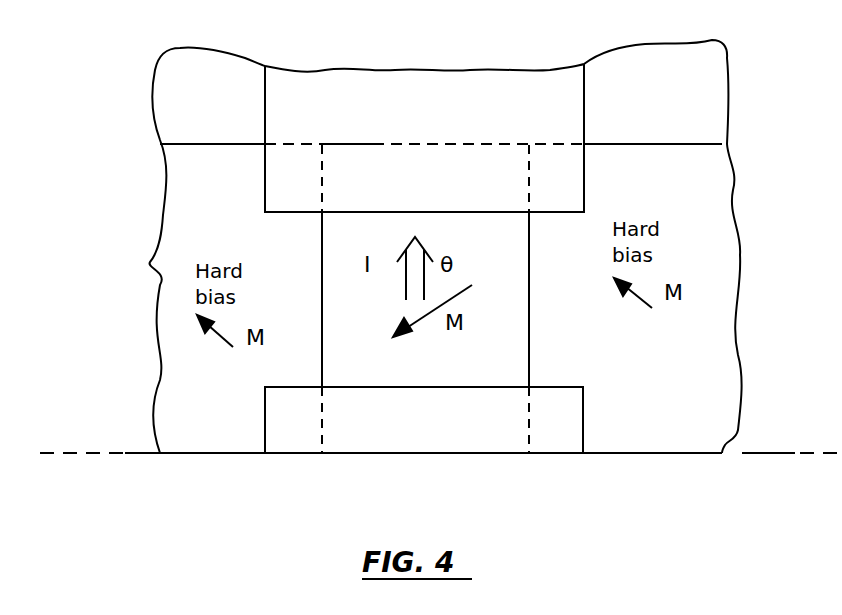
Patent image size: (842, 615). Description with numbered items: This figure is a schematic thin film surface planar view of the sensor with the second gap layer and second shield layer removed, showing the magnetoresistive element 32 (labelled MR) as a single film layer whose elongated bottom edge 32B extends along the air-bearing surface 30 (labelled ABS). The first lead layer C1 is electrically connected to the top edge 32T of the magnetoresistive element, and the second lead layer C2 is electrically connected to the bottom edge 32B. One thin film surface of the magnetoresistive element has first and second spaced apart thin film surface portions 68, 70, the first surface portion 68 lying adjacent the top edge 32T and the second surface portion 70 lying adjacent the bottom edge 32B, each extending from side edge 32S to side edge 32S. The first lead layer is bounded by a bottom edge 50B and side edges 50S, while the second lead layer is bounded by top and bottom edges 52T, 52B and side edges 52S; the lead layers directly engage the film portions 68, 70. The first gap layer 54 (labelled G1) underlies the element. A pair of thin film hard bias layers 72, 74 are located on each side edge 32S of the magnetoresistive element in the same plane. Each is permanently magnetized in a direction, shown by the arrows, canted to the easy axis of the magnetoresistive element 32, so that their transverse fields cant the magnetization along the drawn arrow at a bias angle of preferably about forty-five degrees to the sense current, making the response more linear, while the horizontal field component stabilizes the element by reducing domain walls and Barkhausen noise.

The air-bearing surface 30 is at (793, 455).
The magnetoresistive element 32 is at (529, 312).
The top edge of the magnetoresistive element 32T is at (352, 145).
The side edges of the magnetoresistive element 32S is at (320, 308).
The bottom edge of the magnetoresistive element 32B is at (399, 455).
The bottom edge of the first lead layer 50B is at (397, 212).
The side edges of the first lead layer 50S is at (265, 90).
The top edge of the second lead layer 52T is at (440, 387).
The side edges of the second lead layer 52S is at (265, 423).
The bottom edge of the second lead layer 52B is at (456, 455).
The first gap layer 54 is at (175, 110).
The first thin film surface portion 68 is at (482, 172).
The second thin film surface portion 70 is at (378, 430).
The hard bias layer 72 is at (703, 249).
The hard bias layer 74 is at (188, 230).
The first gap layer G1 is at (441, 103).
The first conductor lead C1 is at (424, 138).
The second conductor lead C2 is at (424, 420).
The magnetoresistive element MR is at (425, 299).
The air bearing surface ABS is at (137, 455).